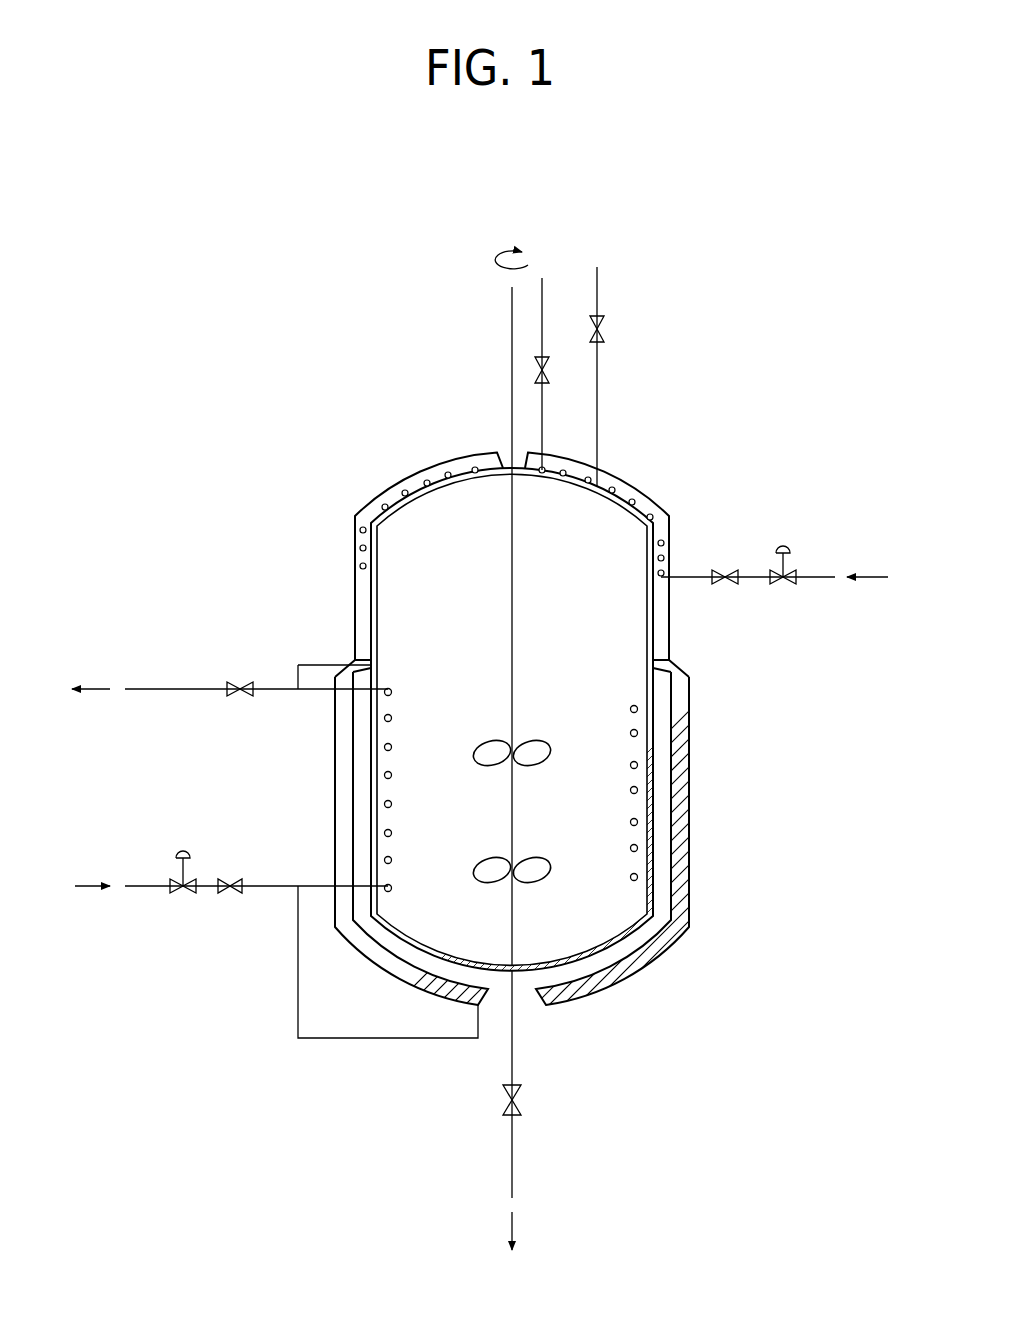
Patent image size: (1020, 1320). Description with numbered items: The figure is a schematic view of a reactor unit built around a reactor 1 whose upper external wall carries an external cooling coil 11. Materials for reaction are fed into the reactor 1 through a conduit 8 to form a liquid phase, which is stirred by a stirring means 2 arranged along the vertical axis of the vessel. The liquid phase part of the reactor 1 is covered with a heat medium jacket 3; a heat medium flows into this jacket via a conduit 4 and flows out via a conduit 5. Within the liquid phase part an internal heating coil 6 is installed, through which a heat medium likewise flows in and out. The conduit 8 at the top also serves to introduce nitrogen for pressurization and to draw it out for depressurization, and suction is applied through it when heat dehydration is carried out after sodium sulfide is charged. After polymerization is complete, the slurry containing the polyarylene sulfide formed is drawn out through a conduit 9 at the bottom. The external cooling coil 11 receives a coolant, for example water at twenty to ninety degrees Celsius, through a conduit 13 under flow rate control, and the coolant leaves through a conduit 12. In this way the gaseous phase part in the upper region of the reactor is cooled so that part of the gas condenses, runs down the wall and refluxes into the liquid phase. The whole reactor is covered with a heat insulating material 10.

The reactor 1 is at (381, 612).
The stirring means 2 is at (540, 746).
The heat medium jacket 3 is at (665, 835).
The conduit 4 is at (148, 890).
The conduit 5 is at (157, 688).
The internal heating coil 6 is at (396, 858).
The conduit 8 is at (602, 290).
The conduit 9 is at (516, 1158).
The heat insulating material 10 is at (688, 750).
The external cooling coil 11 is at (623, 478).
The conduit 12 is at (546, 412).
The conduit 13 is at (818, 573).